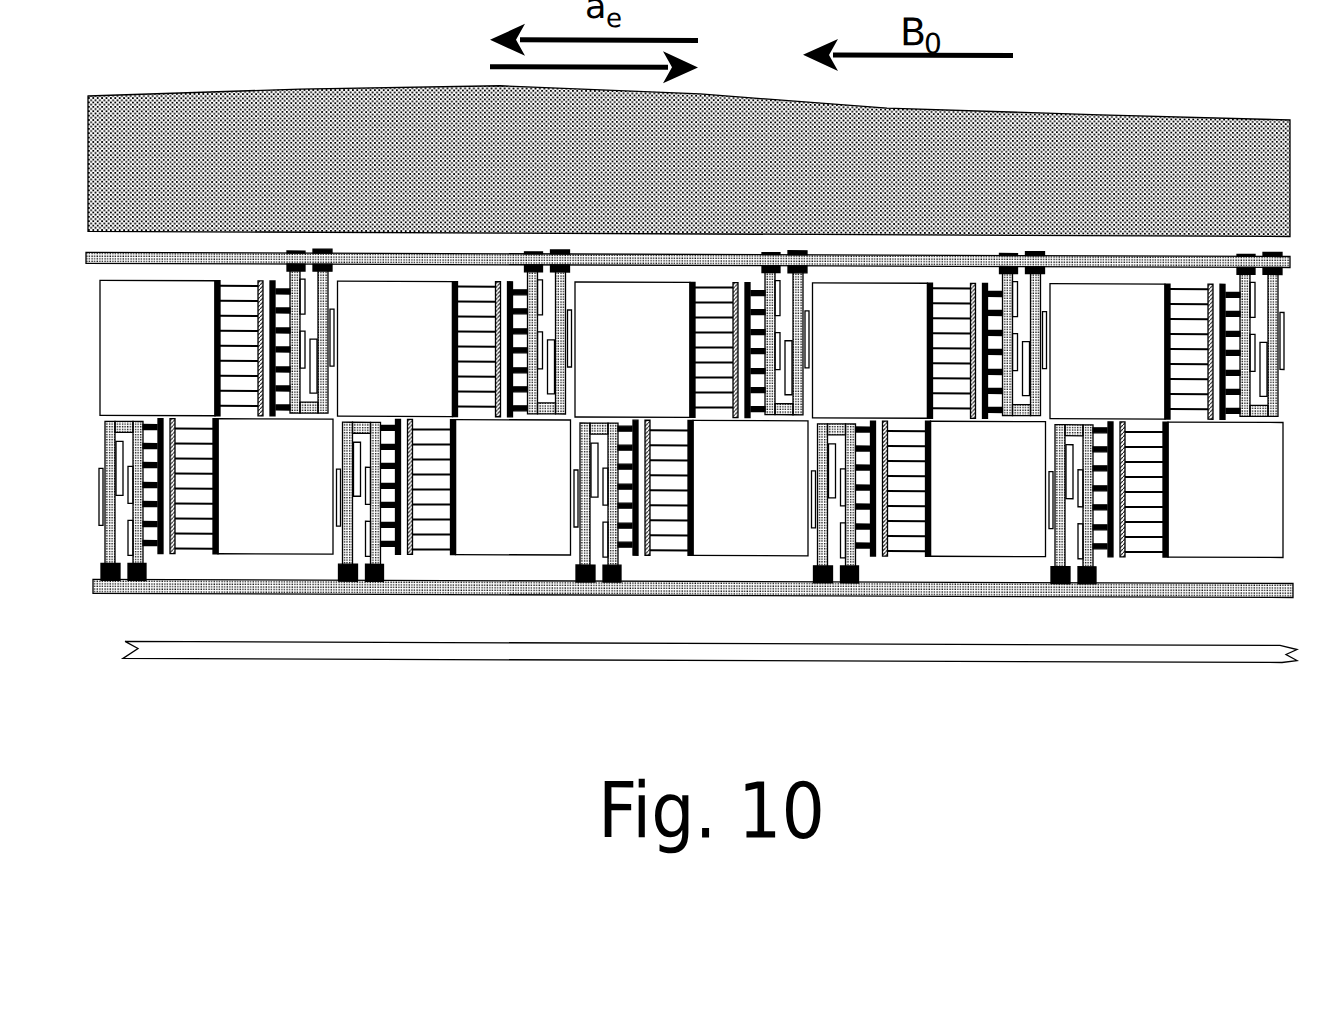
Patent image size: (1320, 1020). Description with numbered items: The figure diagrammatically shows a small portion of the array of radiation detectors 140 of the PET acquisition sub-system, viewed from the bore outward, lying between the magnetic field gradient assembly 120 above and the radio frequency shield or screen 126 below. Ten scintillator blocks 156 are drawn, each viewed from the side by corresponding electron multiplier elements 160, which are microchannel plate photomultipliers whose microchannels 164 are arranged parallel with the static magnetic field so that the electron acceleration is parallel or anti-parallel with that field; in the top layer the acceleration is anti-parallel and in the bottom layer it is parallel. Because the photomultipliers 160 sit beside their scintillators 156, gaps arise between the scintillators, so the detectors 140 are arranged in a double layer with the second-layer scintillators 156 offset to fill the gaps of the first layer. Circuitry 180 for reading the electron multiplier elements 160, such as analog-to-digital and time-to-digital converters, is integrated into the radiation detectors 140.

The magnetic field gradient assembly 120 is at (257, 110).
The radio frequency shield or screen 126 is at (1098, 656).
The radiation detectors 140 is at (234, 613).
The scintillator blocks 156 is at (1258, 502).
The electron multiplier elements 160 is at (669, 568).
The microchannels 164 is at (918, 503).
The circuitry 180 is at (850, 535).